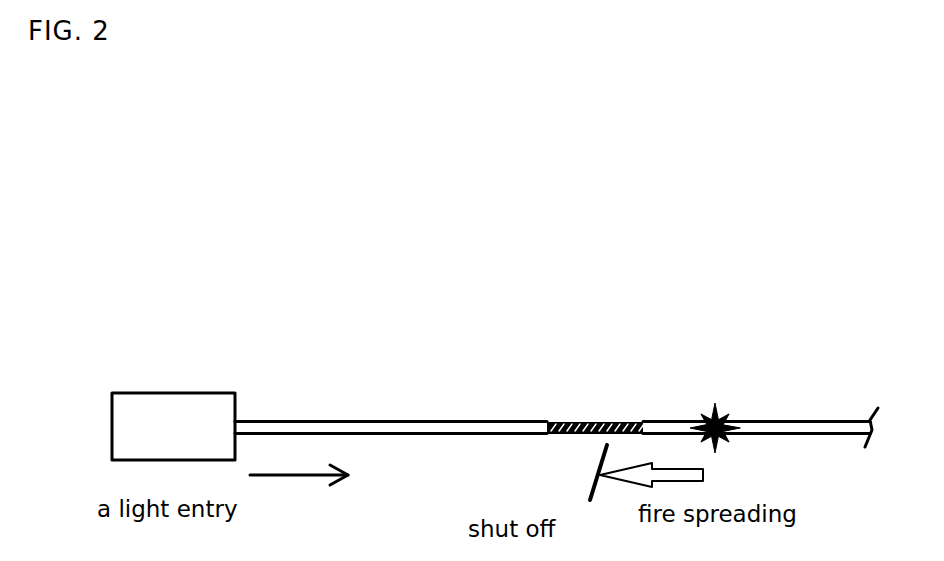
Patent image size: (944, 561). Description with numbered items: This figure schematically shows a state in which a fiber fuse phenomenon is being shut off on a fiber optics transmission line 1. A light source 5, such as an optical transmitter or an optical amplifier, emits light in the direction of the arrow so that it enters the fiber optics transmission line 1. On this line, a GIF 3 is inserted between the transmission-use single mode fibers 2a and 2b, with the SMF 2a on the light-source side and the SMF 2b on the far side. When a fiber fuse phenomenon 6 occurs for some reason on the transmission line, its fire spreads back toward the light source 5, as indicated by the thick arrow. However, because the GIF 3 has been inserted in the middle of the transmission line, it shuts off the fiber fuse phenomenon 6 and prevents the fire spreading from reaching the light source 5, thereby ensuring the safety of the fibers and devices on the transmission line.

The fiber optics transmission line 1 is at (556, 370).
The transmission-use single mode fiber 2a is at (345, 420).
The transmission-use single mode fiber 2b is at (815, 421).
The GIF 3 is at (580, 421).
The light source 5 is at (155, 393).
The fiber fuse phenomenon 6 is at (699, 408).